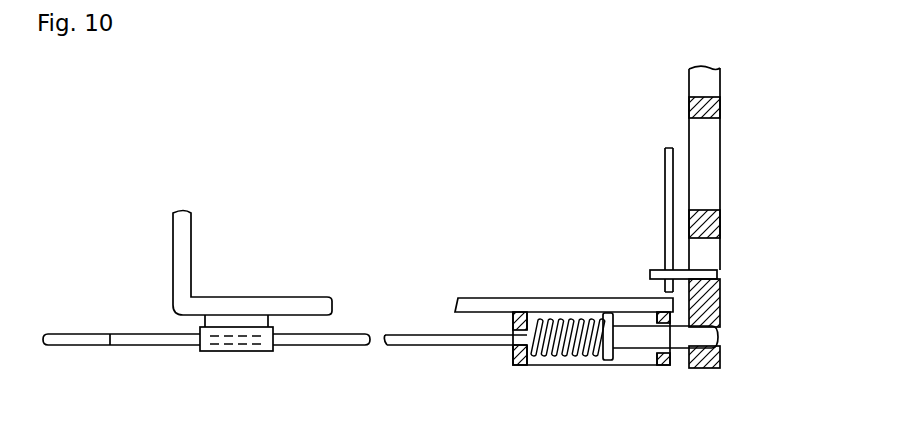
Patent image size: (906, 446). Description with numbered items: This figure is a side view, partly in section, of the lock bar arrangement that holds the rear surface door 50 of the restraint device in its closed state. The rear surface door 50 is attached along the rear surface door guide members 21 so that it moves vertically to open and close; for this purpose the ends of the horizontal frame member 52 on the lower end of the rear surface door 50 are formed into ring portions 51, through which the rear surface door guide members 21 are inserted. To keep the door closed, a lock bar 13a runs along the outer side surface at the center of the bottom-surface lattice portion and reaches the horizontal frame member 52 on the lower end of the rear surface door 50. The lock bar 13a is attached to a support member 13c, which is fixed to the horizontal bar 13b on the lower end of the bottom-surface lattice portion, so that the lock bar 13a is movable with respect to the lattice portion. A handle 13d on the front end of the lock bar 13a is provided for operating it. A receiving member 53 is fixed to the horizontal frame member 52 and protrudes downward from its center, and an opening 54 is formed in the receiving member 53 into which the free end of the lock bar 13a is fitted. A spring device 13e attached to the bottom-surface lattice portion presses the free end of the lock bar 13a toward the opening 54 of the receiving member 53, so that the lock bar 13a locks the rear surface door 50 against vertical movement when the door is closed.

The lock bar 13a is at (313, 346).
The horizontal bar 13b is at (305, 298).
The support member 13c is at (229, 352).
The handle 13d is at (78, 346).
The spring device 13e is at (587, 366).
The rear surface door guide member 21 is at (665, 180).
The rear surface door 50 is at (705, 177).
The ring portion 51 is at (650, 268).
The horizontal frame member 52 is at (708, 272).
The receiving member 53 is at (713, 368).
The opening 54 is at (718, 338).